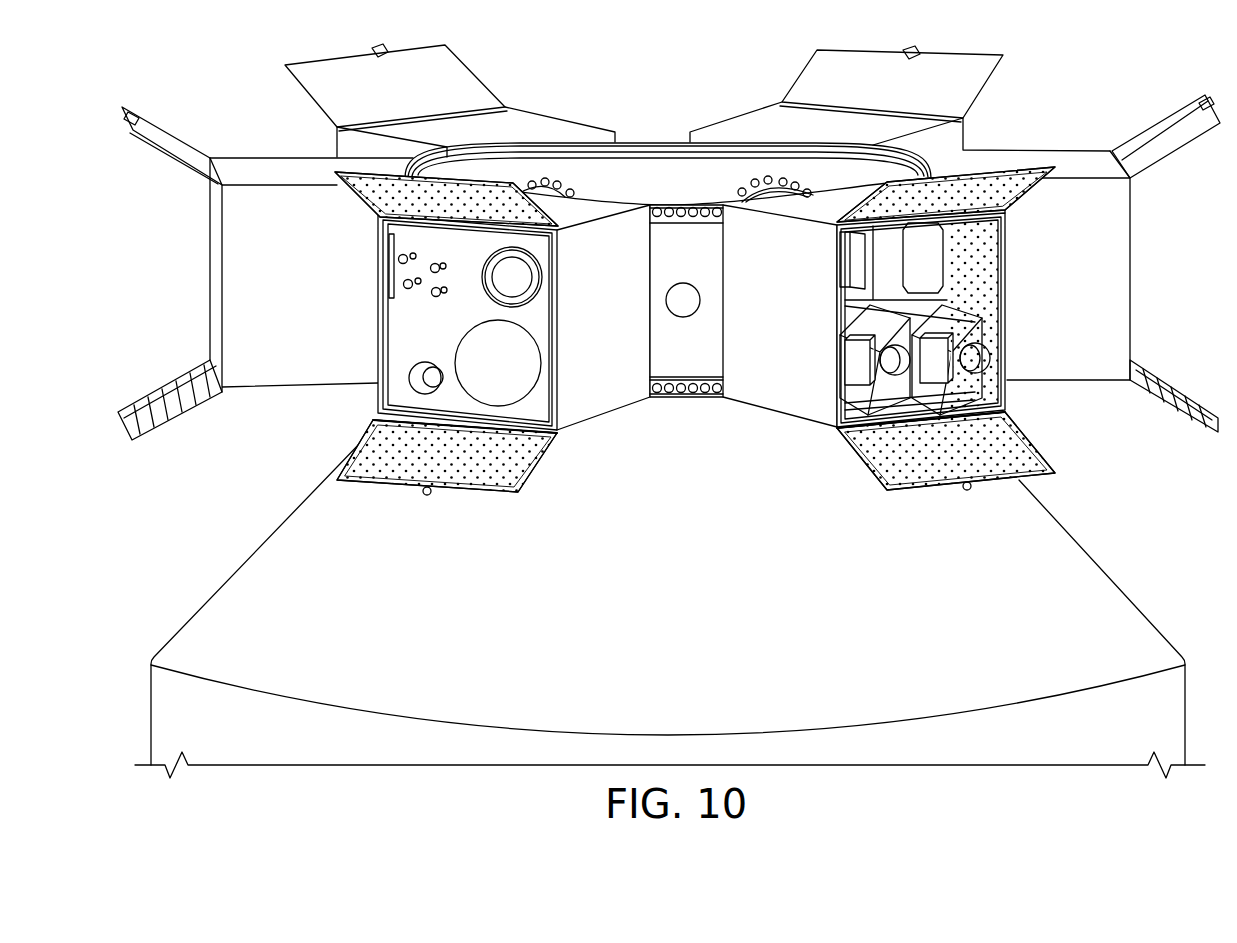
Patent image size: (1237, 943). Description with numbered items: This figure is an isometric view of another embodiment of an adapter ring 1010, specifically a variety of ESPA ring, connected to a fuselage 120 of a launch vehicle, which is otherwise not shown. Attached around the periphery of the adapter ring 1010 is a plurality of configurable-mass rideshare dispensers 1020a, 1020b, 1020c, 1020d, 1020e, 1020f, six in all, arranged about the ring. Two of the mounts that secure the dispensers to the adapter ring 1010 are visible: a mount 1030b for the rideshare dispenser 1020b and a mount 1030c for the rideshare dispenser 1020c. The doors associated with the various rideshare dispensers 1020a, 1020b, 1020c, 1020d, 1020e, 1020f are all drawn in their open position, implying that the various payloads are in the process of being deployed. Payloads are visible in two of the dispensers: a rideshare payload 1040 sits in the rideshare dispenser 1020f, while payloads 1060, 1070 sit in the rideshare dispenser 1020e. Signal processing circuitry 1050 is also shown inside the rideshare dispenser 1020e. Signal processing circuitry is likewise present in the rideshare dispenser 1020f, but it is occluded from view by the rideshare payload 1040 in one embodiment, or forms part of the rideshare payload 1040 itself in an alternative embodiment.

The fuselage 120 is at (700, 583).
The adapter ring 1010 is at (670, 345).
The configurable-mass rideshare dispenser 1020a is at (273, 163).
The configurable-mass rideshare dispenser 1020b is at (498, 60).
The configurable-mass rideshare dispenser 1020c is at (957, 138).
The configurable-mass rideshare dispenser 1020d is at (1123, 303).
The configurable-mass rideshare dispenser 1020e is at (1007, 278).
The configurable-mass rideshare dispenser 1020f is at (377, 280).
The mount 1030b is at (566, 186).
The mount 1030c is at (745, 190).
The rideshare payload 1040 is at (400, 333).
The signal processing circuitry 1050 is at (887, 260).
The payload 1060 is at (862, 363).
The payload 1070 is at (967, 335).